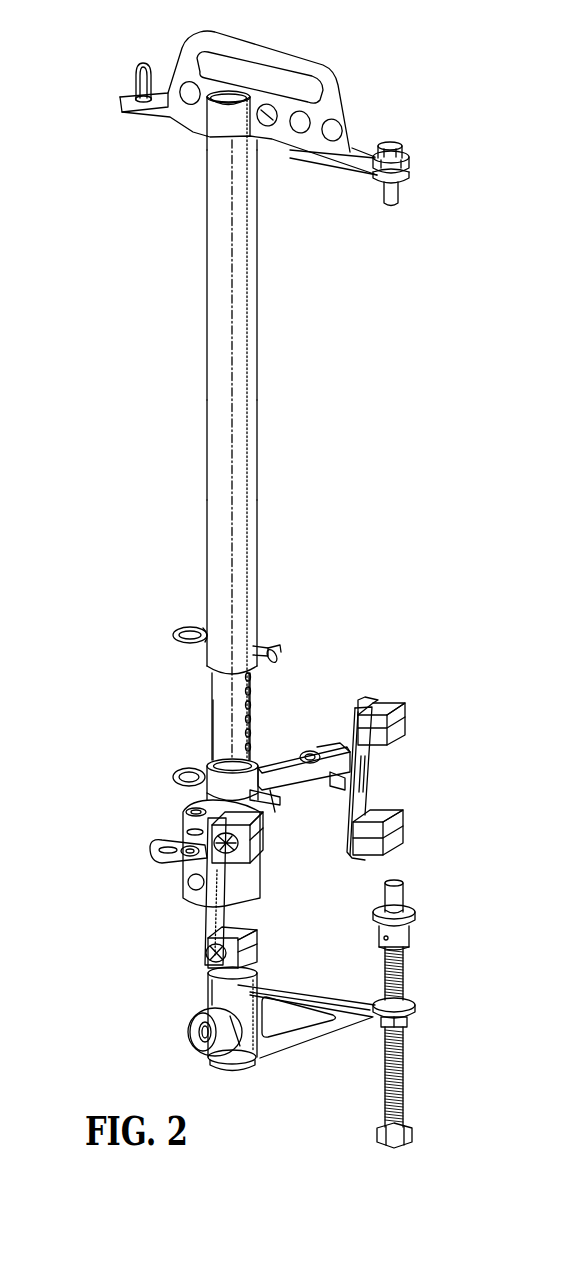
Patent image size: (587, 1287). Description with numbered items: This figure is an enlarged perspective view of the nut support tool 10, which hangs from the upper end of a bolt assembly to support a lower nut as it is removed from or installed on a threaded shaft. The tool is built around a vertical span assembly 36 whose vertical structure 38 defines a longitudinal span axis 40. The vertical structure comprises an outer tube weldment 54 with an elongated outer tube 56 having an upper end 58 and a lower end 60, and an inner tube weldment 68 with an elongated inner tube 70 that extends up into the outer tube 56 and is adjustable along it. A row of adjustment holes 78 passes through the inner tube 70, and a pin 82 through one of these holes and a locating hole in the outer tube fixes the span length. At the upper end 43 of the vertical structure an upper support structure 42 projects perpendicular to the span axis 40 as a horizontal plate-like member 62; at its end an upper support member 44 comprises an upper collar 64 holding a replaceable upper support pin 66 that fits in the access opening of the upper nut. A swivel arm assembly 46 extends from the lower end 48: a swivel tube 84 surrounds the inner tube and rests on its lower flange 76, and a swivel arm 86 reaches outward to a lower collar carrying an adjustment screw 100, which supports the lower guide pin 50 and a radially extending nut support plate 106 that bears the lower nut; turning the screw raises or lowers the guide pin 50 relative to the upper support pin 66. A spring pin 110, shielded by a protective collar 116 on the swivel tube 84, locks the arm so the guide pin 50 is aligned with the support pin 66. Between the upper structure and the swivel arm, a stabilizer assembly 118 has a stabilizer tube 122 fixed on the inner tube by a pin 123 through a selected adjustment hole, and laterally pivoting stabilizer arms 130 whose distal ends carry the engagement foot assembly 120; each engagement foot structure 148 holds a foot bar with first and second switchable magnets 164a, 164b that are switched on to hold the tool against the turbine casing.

The nut support tool 10 is at (105, 58).
The outer tube weldment 54 is at (170, 62).
The upper support structure 42 is at (350, 115).
The upper end 43 is at (200, 182).
The upper end 58 is at (220, 190).
The longitudinal span axis 40 is at (231, 270).
The outer tube 56 is at (215, 348).
The vertical structure 38 is at (180, 480).
The pin 82 is at (190, 628).
The lower end 60 is at (246, 660).
The vertical span assembly 36 is at (190, 660).
The inner tube weldment 68 is at (208, 697).
The inner tube 70 is at (222, 740).
The adjustment holes 78 is at (252, 716).
The pin 123 is at (175, 772).
The stabilizer assembly 118 is at (178, 795).
The stabilizer arm 130 is at (290, 768).
The stabilizer tube 122 is at (272, 805).
The engagement foot assembly 120 is at (405, 700).
The first switchable magnet 164a is at (400, 730).
The second switchable magnet 164b is at (395, 843).
The engagement foot structure 148 is at (400, 815).
The lower end 48 is at (205, 958).
The swivel tube 84 is at (212, 993).
The swivel arm 86 is at (300, 985).
The spring pin 110 is at (195, 1044).
The protective collar 116 is at (235, 1035).
The lower flange 76 is at (240, 1070).
The swivel arm assembly 46 is at (325, 1040).
The plate-like member 62 is at (345, 172).
The upper collar 64 is at (412, 160).
The upper support member 44 is at (415, 171).
The upper support pin 66 is at (402, 200).
The lower guide pin 50 is at (400, 893).
The nut support plate 106 is at (415, 915).
The adjustment screw 100 is at (405, 1085).